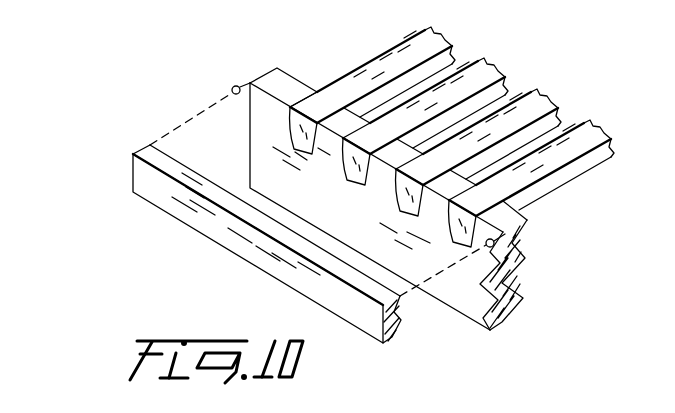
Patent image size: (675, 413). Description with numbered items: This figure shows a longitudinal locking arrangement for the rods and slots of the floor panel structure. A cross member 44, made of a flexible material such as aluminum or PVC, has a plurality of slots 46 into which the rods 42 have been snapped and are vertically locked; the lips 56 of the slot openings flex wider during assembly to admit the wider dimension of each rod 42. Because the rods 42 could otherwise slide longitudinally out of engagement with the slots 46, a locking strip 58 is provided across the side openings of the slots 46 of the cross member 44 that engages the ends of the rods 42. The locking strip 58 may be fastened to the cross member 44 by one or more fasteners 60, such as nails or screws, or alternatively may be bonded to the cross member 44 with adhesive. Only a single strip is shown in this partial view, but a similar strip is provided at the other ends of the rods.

The rod 42 is at (395, 58).
The cross member 44 is at (292, 80).
The slot 46 is at (458, 231).
The lip 56 is at (315, 91).
The locking strip 58 is at (180, 211).
The fastener 60 is at (236, 86).